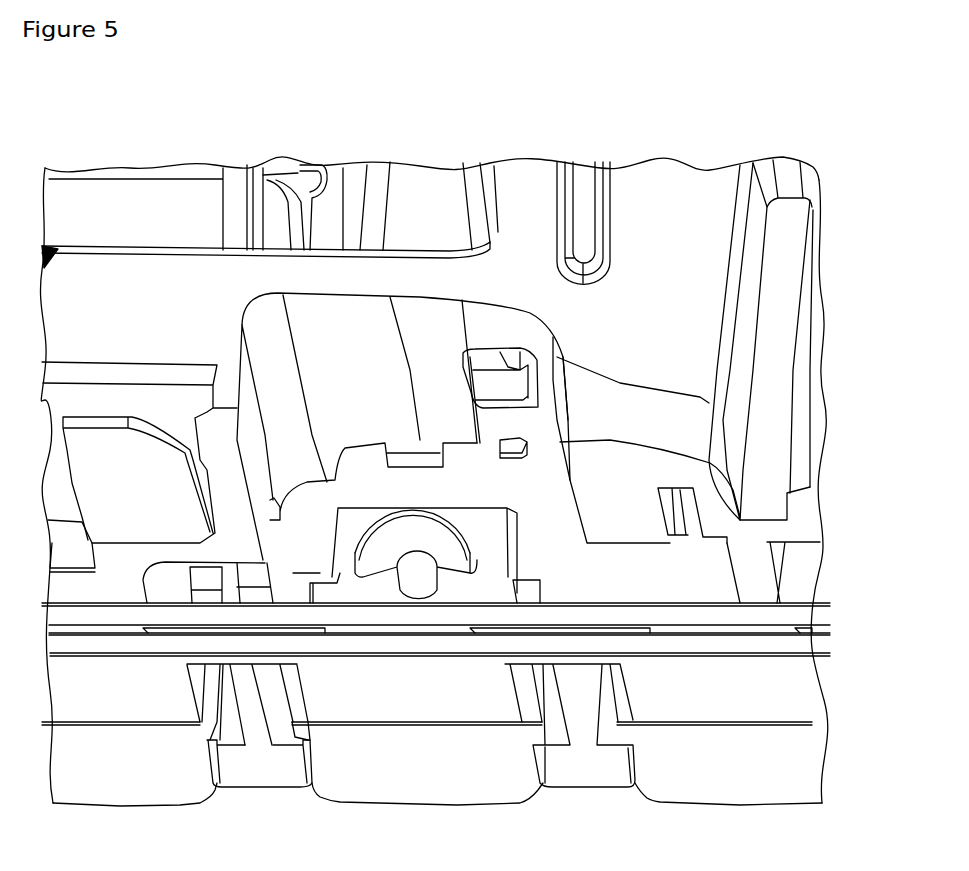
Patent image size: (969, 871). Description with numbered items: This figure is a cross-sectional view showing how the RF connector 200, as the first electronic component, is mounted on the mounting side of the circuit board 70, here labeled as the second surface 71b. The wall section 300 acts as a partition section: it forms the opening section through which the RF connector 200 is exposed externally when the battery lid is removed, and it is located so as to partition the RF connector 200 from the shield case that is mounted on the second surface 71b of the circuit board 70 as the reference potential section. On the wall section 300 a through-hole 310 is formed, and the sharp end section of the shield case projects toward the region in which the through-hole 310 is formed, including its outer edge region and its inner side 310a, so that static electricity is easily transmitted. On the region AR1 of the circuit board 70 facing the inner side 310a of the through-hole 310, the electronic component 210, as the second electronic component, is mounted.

The wall section 300 is at (340, 317).
The inner side of the through-hole 310a is at (485, 350).
The through-hole 310 is at (566, 337).
The electronic component 210 is at (560, 433).
The region AR1 is at (530, 453).
The second surface 71b is at (672, 572).
The circuit board 70 is at (682, 578).
The RF connector 200 is at (490, 560).